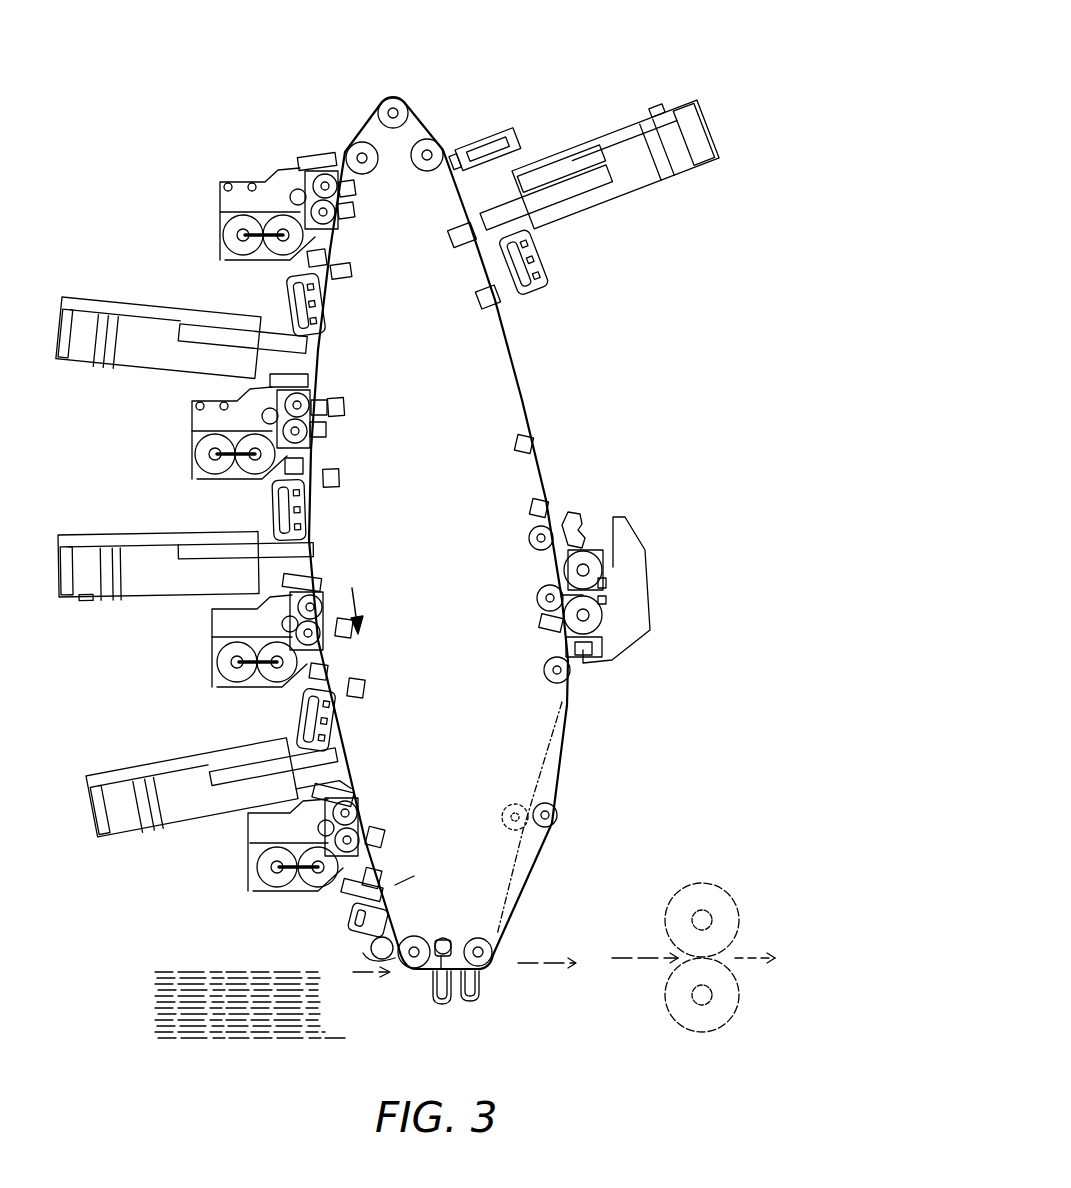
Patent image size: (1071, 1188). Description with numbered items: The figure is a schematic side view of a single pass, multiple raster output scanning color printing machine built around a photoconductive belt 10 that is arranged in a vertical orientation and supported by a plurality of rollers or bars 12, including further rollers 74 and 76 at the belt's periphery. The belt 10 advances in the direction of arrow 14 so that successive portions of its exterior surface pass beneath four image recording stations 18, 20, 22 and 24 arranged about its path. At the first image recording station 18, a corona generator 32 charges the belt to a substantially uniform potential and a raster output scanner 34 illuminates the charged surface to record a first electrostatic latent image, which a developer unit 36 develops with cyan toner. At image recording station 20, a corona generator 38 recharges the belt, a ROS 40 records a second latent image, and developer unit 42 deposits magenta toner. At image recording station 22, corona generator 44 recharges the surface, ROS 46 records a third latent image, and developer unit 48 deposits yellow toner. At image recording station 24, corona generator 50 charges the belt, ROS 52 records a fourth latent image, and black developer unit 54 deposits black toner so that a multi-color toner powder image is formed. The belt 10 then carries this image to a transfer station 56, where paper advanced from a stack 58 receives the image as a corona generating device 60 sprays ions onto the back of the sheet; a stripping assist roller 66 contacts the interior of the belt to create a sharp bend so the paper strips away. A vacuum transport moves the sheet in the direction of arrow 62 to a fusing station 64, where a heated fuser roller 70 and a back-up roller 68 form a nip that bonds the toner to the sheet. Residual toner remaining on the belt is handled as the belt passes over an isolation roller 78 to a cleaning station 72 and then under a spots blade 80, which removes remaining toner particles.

The photoconductive belt 10 is at (565, 733).
The rollers or bars 12 is at (352, 203).
The arrow 14 is at (355, 586).
The image recording station 18 is at (603, 182).
The image recording station 20 is at (205, 279).
The image recording station 22 is at (192, 509).
The image recording station 24 is at (219, 721).
The corona generator 32 is at (530, 262).
The raster output scanner (ROS) 34 is at (712, 152).
The developer unit 36 is at (248, 182).
The corona generator 38 is at (290, 303).
The ROS 40 is at (66, 365).
The developer unit 42 is at (190, 420).
The corona generator 44 is at (270, 517).
The ROS 46 is at (84, 600).
The developer unit 48 is at (214, 633).
The corona generator 50 is at (297, 712).
The ROS 52 is at (196, 820).
The black developer unit 54 is at (254, 860).
The transfer station 56 is at (448, 971).
The stack 58 is at (245, 1022).
The corona generating device 60 is at (460, 1000).
The arrow 62 is at (560, 970).
The fusing station 64 is at (690, 952).
The stripping assist roller 66 is at (476, 938).
The back-up roller 68 is at (685, 1015).
The fuser roller 70 is at (728, 908).
The cleaning station 72 is at (612, 587).
The roller 74 is at (556, 815).
The top roller 76 is at (385, 102).
The isolation roller 78 is at (545, 668).
The spots blade 80 is at (580, 512).